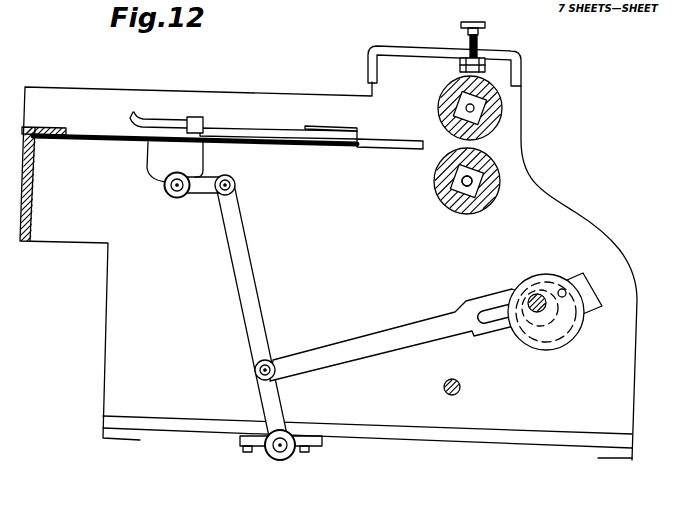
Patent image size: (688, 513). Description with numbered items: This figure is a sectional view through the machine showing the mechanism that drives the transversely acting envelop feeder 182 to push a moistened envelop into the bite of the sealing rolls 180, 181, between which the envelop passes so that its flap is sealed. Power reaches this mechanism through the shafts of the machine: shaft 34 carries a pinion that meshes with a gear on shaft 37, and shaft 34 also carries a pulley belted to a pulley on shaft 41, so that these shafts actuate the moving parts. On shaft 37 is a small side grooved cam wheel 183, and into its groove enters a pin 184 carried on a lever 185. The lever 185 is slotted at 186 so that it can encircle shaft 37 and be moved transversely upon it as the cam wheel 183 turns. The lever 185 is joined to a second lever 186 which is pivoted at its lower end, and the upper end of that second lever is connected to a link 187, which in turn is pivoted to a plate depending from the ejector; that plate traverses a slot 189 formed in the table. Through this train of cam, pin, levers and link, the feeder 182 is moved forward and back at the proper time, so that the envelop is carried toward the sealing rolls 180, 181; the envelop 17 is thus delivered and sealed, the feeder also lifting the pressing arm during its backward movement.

The platen plate 17 is at (282, 128).
The shaft 34 is at (445, 392).
The shaft 37 is at (543, 293).
The shaft 41 is at (497, 177).
The sealing roll 180 is at (503, 108).
The sealing roll 181 is at (497, 167).
The transversely acting envelop feeder 182 is at (200, 118).
The side grooved cam wheel 183 is at (557, 351).
The pin 184 is at (584, 273).
The lever 185 is at (398, 328).
The slot 186 is at (498, 318).
The link 187 is at (200, 192).
The slot 189 is at (210, 137).